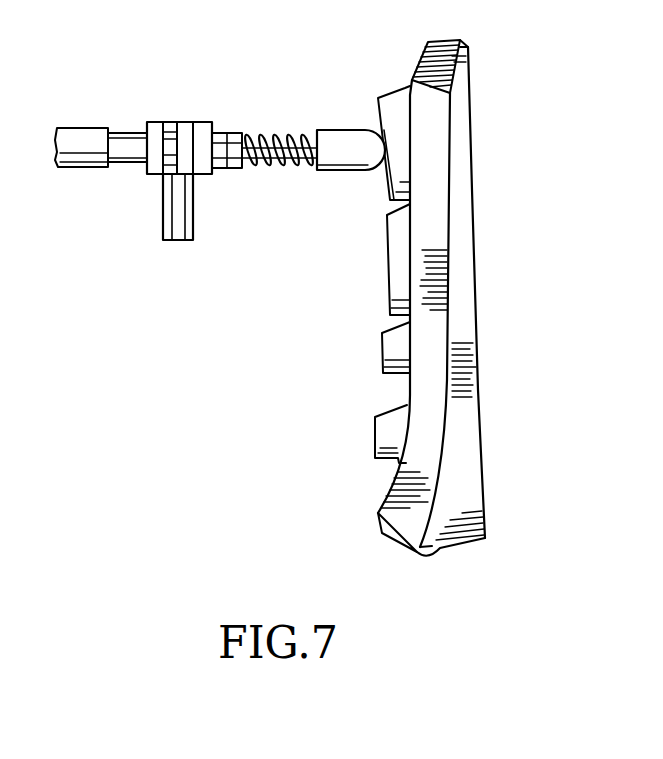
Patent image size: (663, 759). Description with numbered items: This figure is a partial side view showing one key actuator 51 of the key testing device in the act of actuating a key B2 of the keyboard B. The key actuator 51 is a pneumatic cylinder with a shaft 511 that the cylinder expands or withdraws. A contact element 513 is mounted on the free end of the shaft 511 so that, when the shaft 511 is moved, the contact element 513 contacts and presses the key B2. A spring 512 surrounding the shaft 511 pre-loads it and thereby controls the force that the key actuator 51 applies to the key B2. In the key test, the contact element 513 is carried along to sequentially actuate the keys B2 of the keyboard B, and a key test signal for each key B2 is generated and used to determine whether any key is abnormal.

The key actuator 51 is at (88, 145).
The shaft 511 is at (287, 138).
The spring 512 is at (255, 138).
The contact element 513 is at (337, 140).
The keyboard B is at (465, 317).
The key B2 is at (405, 140).